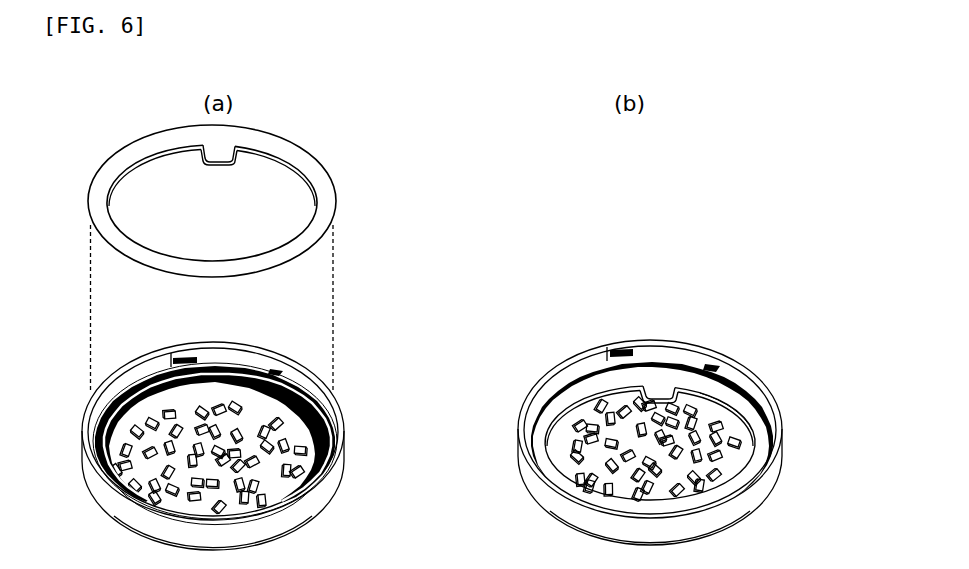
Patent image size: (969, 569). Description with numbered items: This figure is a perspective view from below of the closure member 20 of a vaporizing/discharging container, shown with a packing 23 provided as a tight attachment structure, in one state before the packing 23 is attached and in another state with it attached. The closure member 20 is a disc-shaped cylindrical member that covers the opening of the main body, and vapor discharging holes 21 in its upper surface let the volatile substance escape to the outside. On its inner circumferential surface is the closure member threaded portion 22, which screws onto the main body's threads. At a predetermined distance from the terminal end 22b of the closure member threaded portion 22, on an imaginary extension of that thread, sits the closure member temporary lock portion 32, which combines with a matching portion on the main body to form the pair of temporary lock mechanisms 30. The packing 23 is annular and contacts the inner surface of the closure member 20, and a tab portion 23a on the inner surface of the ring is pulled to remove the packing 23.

The closure member 20 is at (300, 508).
The vapor discharging holes 21 is at (305, 408).
The closure member threaded portion 22 is at (250, 370).
The terminal end 22b is at (276, 372).
The packing 23 is at (474, 312).
The tab portion 23a is at (225, 152).
The temporary lock mechanisms 30 is at (186, 359).
The closure member temporary lock portion 32 is at (436, 329).